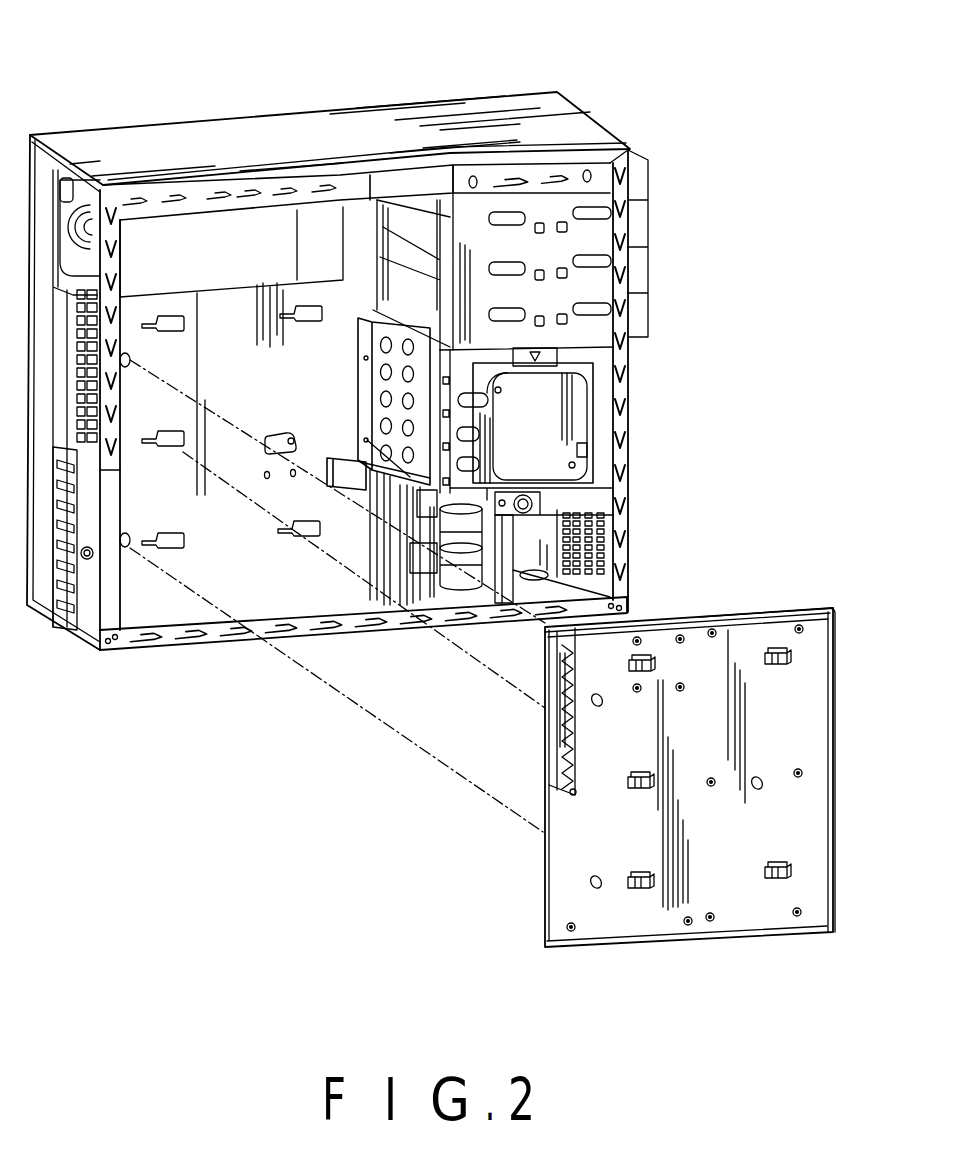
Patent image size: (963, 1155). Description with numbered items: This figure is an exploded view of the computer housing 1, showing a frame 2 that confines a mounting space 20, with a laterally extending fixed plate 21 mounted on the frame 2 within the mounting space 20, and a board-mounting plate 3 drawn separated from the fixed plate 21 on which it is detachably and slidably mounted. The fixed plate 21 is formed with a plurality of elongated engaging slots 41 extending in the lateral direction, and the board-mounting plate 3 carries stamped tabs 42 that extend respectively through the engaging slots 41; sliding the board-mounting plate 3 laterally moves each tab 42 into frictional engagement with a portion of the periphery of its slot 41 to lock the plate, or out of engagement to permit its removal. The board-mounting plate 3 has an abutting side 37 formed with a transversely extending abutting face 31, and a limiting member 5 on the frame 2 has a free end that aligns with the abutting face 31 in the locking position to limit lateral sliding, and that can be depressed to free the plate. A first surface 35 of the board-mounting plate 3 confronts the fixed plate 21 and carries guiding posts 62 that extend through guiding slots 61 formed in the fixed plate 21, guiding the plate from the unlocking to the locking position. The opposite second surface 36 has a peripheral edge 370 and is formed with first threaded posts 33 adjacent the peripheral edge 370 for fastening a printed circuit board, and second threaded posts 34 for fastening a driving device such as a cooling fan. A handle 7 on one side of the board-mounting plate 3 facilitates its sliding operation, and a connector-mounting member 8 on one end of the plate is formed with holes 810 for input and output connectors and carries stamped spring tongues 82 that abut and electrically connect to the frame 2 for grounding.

The computer housing 1 is at (200, 103).
The frame 2 is at (277, 125).
The mounting space 20 is at (351, 295).
The fixed plate 21 is at (235, 313).
The board-mounting plate 3 is at (745, 572).
The abutting face 31 is at (838, 930).
The first threaded posts 33 is at (799, 634).
The second threaded posts 34 is at (636, 640).
The first surface 35 is at (752, 612).
The second surface 36 is at (757, 915).
The abutting side 37 is at (830, 668).
The peripheral edge 370 is at (660, 915).
The engaging slots 41 is at (280, 524).
The stamped tabs 42 is at (640, 790).
The limiting member 5 is at (352, 498).
The guiding slot 61 is at (285, 437).
The guiding post 62 is at (597, 888).
The handle 7 is at (725, 625).
The connector-mounting member 8 is at (525, 697).
The stamped spring tongues 82 is at (560, 722).
The holes 810 is at (558, 735).